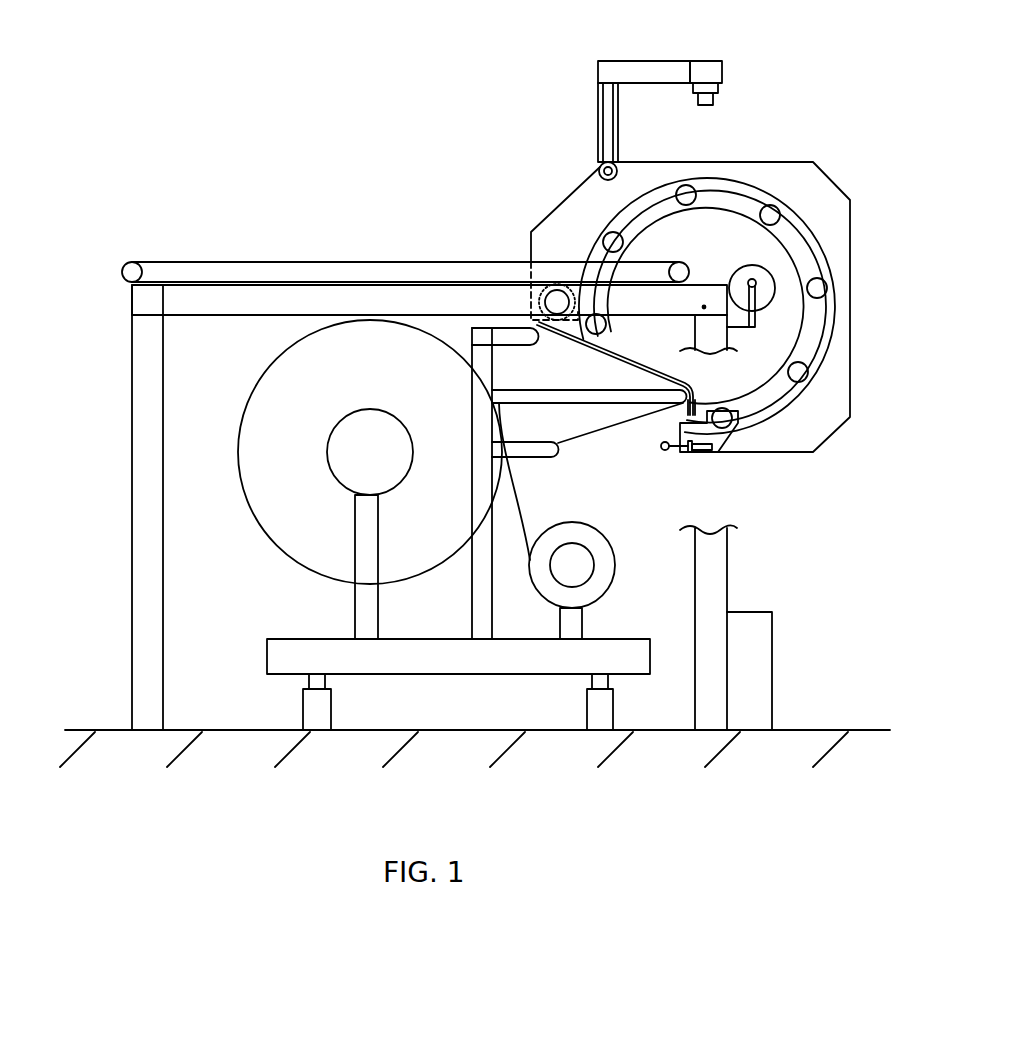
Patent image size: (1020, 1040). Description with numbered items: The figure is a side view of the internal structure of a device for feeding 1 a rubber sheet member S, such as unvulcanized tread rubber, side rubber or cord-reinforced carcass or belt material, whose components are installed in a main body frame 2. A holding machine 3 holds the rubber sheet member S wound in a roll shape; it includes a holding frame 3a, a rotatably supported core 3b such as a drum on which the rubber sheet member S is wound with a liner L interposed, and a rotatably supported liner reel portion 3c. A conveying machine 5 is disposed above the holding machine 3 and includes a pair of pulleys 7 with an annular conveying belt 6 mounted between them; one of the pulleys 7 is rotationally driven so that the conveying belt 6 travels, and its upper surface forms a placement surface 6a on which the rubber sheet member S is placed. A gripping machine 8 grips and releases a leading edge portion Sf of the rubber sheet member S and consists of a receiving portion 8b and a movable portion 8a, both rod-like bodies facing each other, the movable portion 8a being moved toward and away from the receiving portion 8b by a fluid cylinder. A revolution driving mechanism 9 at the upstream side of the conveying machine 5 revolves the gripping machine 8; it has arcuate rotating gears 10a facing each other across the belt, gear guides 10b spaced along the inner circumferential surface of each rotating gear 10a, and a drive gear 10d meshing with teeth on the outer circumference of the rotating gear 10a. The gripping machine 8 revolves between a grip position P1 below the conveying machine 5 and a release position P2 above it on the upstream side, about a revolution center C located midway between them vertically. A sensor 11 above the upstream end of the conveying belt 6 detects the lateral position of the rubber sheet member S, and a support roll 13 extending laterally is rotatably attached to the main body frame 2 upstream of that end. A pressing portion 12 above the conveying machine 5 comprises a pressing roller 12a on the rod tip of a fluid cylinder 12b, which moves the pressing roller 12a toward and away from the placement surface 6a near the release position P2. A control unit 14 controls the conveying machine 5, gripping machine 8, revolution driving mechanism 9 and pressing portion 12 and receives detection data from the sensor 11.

The device for feeding a rubber sheet member 1 is at (374, 124).
The main body frame 2 is at (142, 598).
The holding machine 3 is at (226, 410).
The holding frame 3a is at (290, 636).
The core 3b is at (345, 440).
The liner reel portion 3c is at (606, 574).
The conveying machine 5 is at (405, 219).
The conveying belt 6 is at (318, 258).
The placement surface 6a is at (392, 258).
The pulleys 7 is at (136, 266).
The gripping machine 8 is at (664, 474).
The movable portion 8a is at (653, 459).
The receiving portion 8b is at (685, 458).
The revolution driving mechanism 9 is at (819, 222).
The rotating gears 10a is at (665, 186).
The gear guides 10b is at (770, 212).
The drive gear 10d is at (548, 292).
The sensor 11 is at (708, 97).
The pressing portion 12 is at (583, 116).
The pressing roller 12a is at (602, 168).
The fluid cylinder 12b is at (605, 100).
The support roll 13 is at (742, 279).
The control unit 14 is at (764, 632).
The revolution center C is at (706, 310).
The liner L is at (575, 430).
The grip position P1 is at (708, 458).
The release position P2 is at (562, 225).
The rubber sheet member S is at (632, 352).
The leading edge portion Sf is at (702, 410).